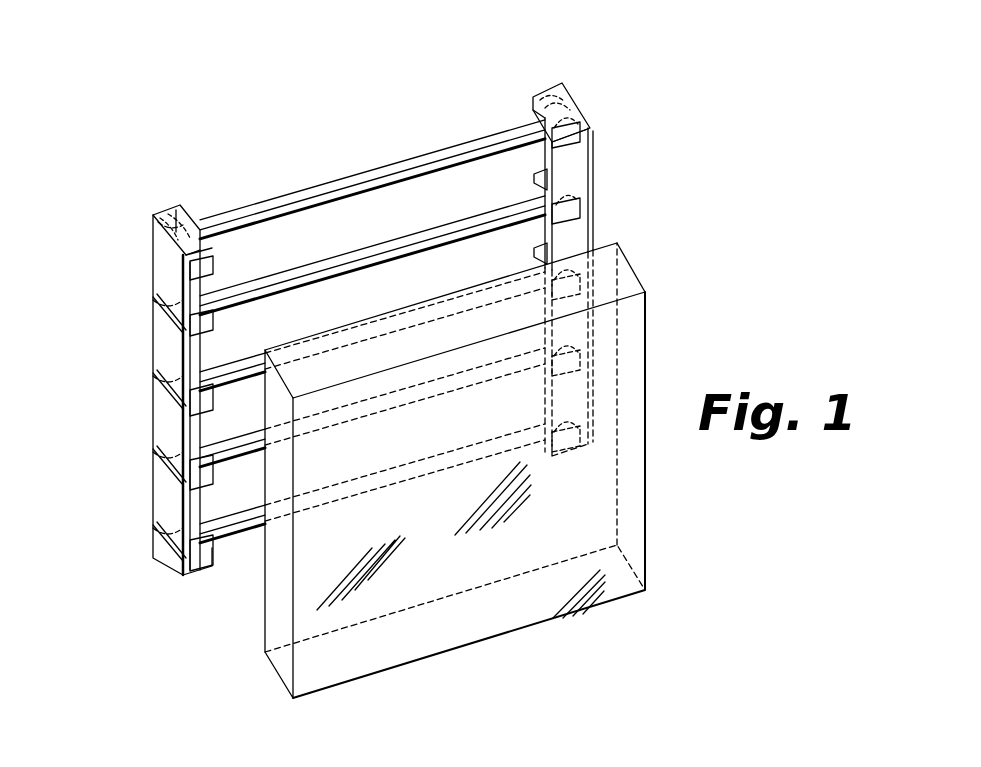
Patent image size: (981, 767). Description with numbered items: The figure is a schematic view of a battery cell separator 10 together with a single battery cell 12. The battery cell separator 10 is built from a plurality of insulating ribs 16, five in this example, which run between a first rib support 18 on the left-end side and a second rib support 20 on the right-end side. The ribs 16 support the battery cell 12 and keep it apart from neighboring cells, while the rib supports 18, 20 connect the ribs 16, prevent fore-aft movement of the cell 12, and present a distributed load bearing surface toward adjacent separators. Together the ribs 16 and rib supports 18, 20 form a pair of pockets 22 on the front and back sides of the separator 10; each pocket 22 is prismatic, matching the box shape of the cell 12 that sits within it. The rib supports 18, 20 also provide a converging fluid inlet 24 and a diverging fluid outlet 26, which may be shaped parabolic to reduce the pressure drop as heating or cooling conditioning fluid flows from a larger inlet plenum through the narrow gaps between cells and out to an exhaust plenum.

The battery cell separator 10 is at (320, 114).
The battery cell 12 is at (630, 264).
The insulating ribs 16 is at (240, 290).
The first rib support 18 is at (150, 263).
The second rib support 20 is at (595, 167).
The pocket 22 is at (564, 169).
The converging fluid inlet 24 is at (152, 212).
The diverging fluid outlet 26 is at (578, 100).